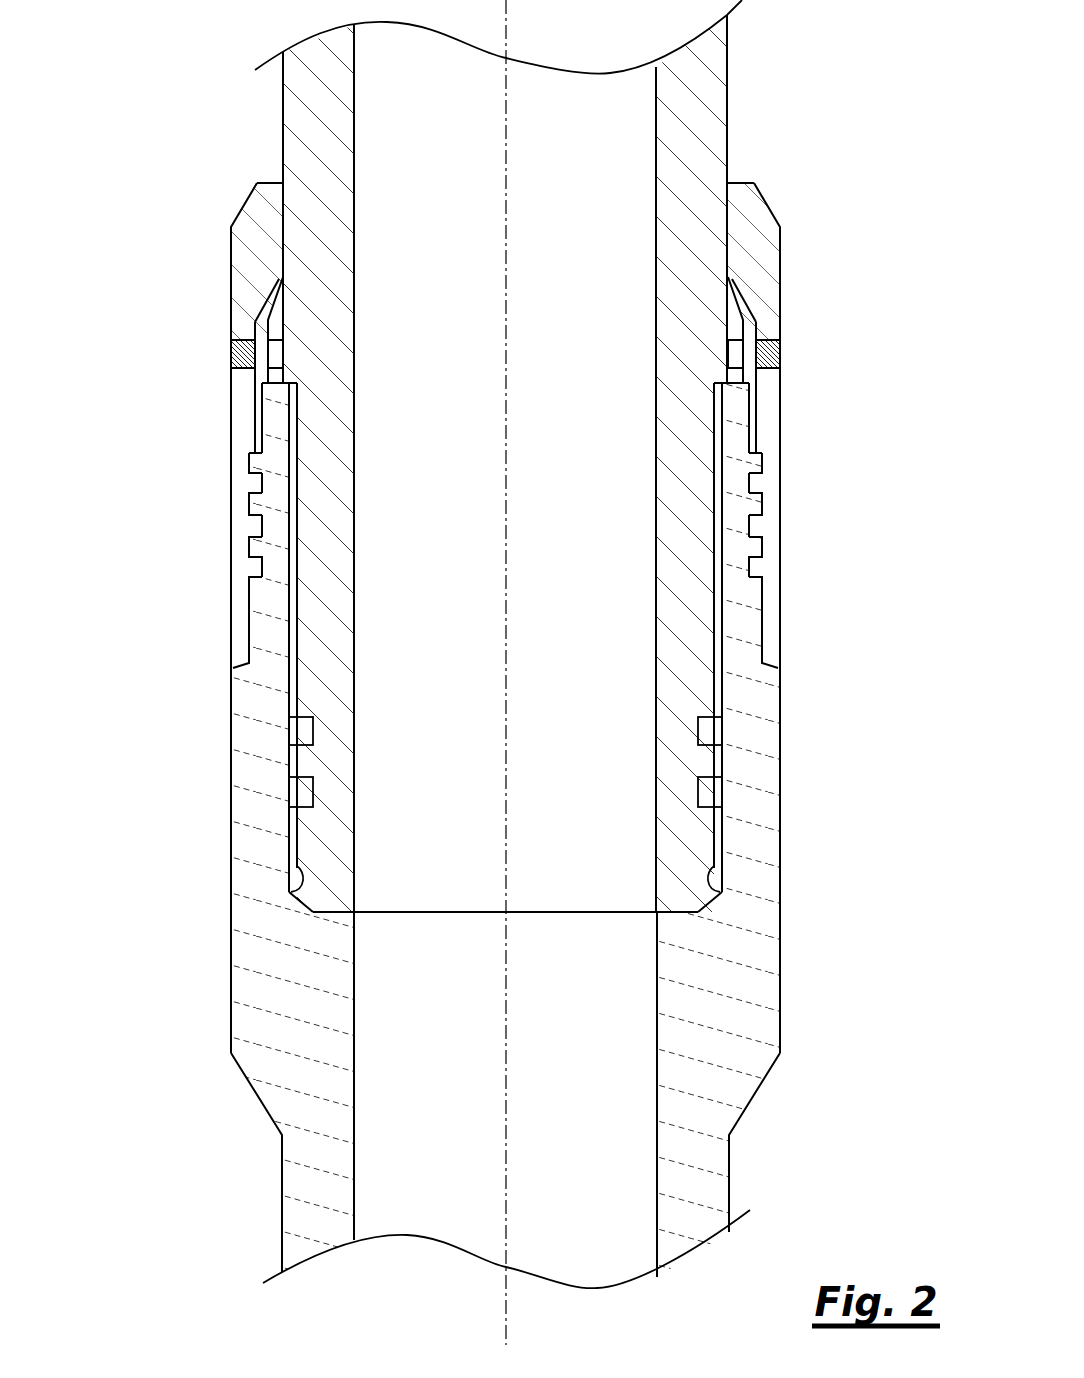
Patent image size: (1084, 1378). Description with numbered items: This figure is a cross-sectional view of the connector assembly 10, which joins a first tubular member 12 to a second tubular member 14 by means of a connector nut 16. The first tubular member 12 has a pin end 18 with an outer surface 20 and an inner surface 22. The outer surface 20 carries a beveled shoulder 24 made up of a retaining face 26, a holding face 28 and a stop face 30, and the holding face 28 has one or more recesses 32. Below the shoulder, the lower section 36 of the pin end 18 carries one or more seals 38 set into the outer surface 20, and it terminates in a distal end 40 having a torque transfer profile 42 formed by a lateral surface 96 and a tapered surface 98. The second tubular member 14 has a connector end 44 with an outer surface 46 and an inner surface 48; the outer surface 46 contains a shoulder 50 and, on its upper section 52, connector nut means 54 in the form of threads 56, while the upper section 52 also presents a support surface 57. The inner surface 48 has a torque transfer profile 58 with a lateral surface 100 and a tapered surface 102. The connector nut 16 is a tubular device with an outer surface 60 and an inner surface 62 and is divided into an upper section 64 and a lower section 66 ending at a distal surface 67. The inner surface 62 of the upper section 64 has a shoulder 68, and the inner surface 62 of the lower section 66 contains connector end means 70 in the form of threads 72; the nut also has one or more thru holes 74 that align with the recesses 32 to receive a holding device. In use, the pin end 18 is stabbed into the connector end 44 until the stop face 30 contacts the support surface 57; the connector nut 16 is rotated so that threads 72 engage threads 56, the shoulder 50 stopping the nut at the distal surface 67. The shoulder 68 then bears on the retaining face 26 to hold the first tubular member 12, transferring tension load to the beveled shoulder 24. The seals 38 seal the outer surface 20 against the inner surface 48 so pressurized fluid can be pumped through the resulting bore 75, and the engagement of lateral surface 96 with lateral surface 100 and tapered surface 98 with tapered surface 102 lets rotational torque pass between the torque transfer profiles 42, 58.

The connector assembly 10 is at (128, 214).
The first tubular member 12 is at (707, 72).
The second tubular member 14 is at (300, 1193).
The connector nut 16 is at (755, 255).
The pin end 18 is at (318, 308).
The outer surface 20 is at (720, 682).
The inner surface 22 is at (636, 458).
The beveled shoulder 24 is at (267, 320).
The retaining face 26 is at (745, 300).
The holding face 28 is at (752, 325).
The stop face 30 is at (750, 392).
The recess 32 is at (733, 352).
The lower section 36 is at (318, 837).
The seals 38 is at (295, 790).
The distal end 40 is at (690, 822).
The torque transfer profile 42 is at (683, 913).
The connector end 44 is at (760, 782).
The outer surface 46 is at (228, 690).
The inner surface 48 is at (748, 575).
The shoulder 50 is at (240, 660).
The upper section 52 is at (733, 493).
The connector nut means 54 is at (257, 502).
The threads 56 is at (255, 512).
The support surface 57 is at (260, 373).
The torque transfer profile 58 is at (302, 873).
The outer surface 60 is at (782, 615).
The inner surface 62 is at (745, 385).
The upper section 64 is at (242, 270).
The lower section 66 is at (768, 548).
The distal surface 67 is at (773, 667).
The shoulder 68 is at (730, 290).
The connector end means 70 is at (237, 517).
The threads 72 is at (257, 567).
The thru holes 74 is at (232, 355).
The bore 75 is at (563, 1017).
The lateral surface 96 is at (335, 914).
The tapered surface 98 is at (303, 907).
The lateral surface 100 is at (707, 893).
The tapered surface 102 is at (717, 877).